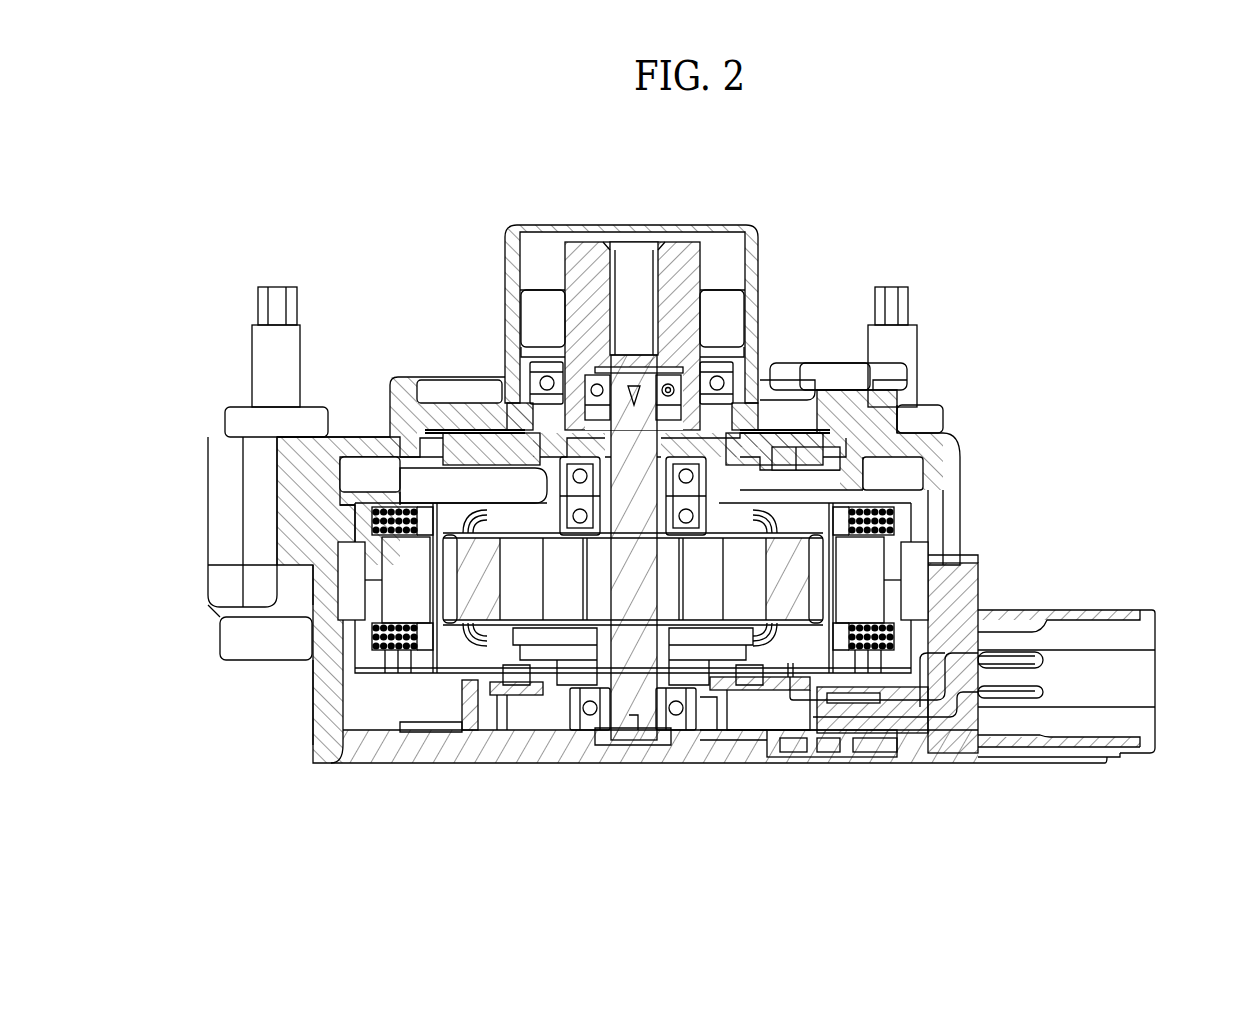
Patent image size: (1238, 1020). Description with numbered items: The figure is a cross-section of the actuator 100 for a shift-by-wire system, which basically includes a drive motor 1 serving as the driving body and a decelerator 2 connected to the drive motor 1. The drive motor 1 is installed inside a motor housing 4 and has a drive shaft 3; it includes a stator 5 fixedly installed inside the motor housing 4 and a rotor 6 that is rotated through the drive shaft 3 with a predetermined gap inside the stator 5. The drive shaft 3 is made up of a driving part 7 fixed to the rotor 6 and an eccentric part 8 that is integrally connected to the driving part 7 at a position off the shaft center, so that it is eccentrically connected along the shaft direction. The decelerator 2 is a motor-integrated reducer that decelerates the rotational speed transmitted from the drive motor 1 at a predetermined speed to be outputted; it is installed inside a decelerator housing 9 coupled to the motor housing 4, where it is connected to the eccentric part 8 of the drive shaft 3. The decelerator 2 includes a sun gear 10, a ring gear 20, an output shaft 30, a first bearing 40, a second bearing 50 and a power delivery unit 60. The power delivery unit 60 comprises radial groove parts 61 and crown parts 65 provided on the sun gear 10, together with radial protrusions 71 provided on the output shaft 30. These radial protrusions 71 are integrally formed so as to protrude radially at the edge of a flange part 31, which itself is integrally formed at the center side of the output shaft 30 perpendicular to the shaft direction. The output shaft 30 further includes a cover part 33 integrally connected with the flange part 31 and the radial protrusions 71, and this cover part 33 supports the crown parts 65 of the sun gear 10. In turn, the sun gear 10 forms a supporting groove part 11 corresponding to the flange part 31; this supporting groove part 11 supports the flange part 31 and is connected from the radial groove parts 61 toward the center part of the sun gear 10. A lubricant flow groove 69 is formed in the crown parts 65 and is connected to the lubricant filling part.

The actuator 100 is at (628, 154).
The drive motor 1 is at (300, 715).
The decelerator 2 is at (470, 300).
The drive shaft 3 is at (688, 826).
The motor housing 4 is at (428, 740).
The stator 5 is at (382, 682).
The rotor 6 is at (832, 570).
The driving part 7 is at (570, 688).
The eccentric part 8 is at (686, 688).
The decelerator housing 9 is at (350, 447).
The sun gear 10 is at (867, 480).
The supporting groove part 11 is at (860, 445).
The ring gear 20 is at (928, 470).
The output shaft 30 is at (706, 270).
The flange part 31 is at (800, 452).
The cover part 33 is at (780, 490).
The first bearing 40 is at (553, 490).
The second bearing 50 is at (570, 412).
The power delivery unit 60 is at (442, 463).
The radial groove parts 61 is at (333, 500).
The crown parts 65 is at (808, 455).
The lubricant flow groove 69 is at (735, 455).
The radial protrusions 71 is at (417, 523).